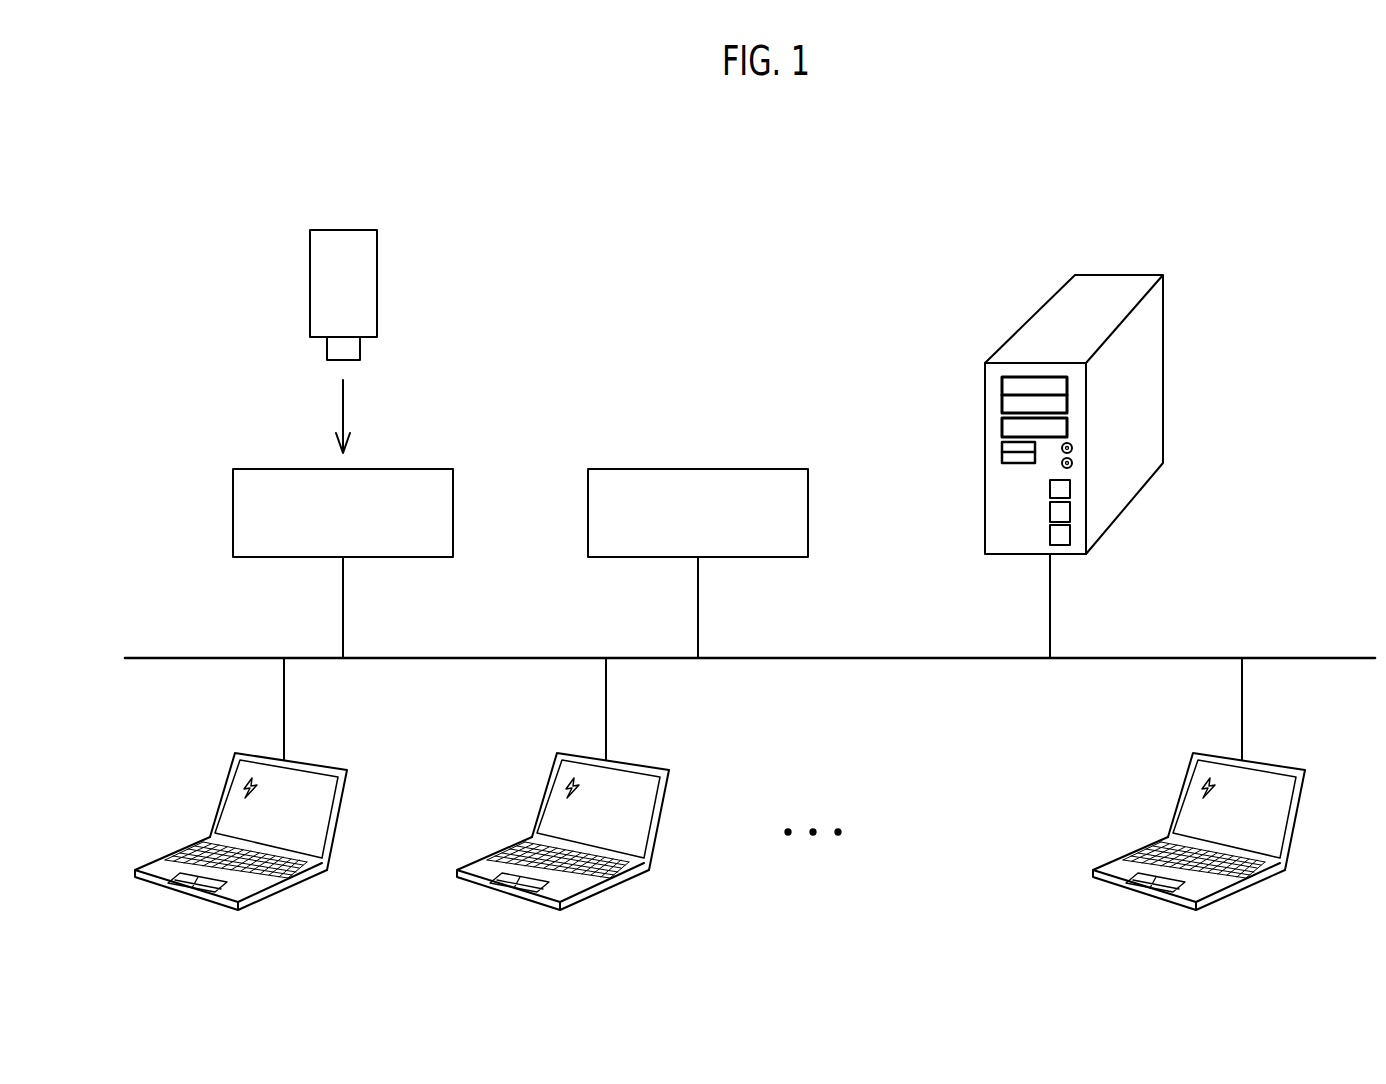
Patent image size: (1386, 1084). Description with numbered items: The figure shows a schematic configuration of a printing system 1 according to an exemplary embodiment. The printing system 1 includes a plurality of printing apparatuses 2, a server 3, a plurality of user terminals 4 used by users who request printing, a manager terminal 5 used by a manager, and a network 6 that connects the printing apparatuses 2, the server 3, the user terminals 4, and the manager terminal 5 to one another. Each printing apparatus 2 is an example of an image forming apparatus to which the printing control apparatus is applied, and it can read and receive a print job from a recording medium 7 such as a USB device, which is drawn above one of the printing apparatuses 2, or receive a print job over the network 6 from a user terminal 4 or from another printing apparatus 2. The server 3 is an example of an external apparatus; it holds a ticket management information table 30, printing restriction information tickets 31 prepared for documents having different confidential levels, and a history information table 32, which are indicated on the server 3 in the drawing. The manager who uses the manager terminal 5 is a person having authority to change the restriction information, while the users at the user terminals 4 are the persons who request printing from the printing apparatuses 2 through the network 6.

The printing system 1 is at (1103, 155).
The printing apparatus 2 is at (388, 468).
The server 3 is at (1104, 437).
The user terminal 4 is at (257, 903).
The manager terminal 5 is at (1217, 903).
The network 6 is at (880, 657).
The recording medium 7 is at (352, 227).
The ticket management information table 30 is at (1070, 488).
The printing restriction information ticket 31 is at (1070, 512).
The history information table 32 is at (1070, 533).